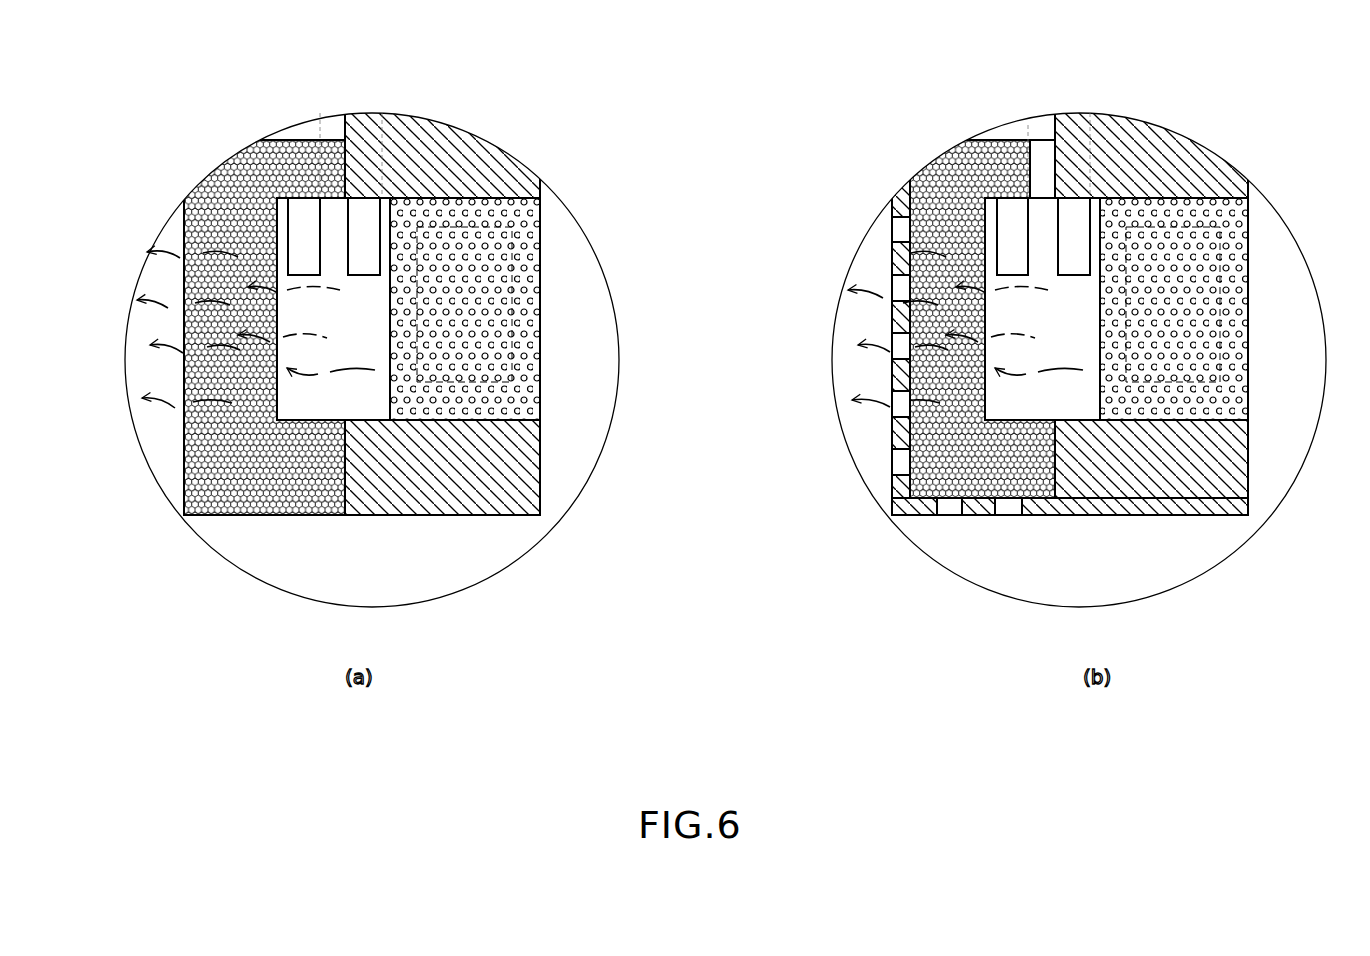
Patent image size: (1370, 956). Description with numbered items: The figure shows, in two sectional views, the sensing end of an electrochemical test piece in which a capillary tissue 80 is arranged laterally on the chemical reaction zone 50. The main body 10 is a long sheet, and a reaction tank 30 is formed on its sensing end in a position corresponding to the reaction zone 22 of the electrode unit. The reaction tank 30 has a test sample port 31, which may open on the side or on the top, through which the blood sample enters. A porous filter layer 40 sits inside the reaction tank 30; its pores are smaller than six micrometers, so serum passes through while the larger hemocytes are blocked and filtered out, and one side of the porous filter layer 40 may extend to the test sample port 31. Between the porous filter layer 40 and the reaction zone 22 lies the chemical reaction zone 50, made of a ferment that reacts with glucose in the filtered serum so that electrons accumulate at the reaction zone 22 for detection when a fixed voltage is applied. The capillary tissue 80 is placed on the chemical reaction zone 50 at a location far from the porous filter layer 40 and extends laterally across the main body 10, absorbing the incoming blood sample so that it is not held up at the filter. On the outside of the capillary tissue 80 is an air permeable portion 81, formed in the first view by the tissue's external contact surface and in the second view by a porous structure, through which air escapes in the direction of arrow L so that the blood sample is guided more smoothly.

The main body 10 is at (553, 465).
The reaction zone 22 is at (298, 232).
The reaction tank 30 is at (362, 400).
The test sample port 31 is at (525, 333).
The porous filter layer 40 is at (527, 268).
The chemical reaction zone 50 is at (347, 310).
The capillary tissue 80 is at (185, 458).
The air permeable portion 81 is at (184, 270).
The arrow indicating air leakage L is at (158, 348).